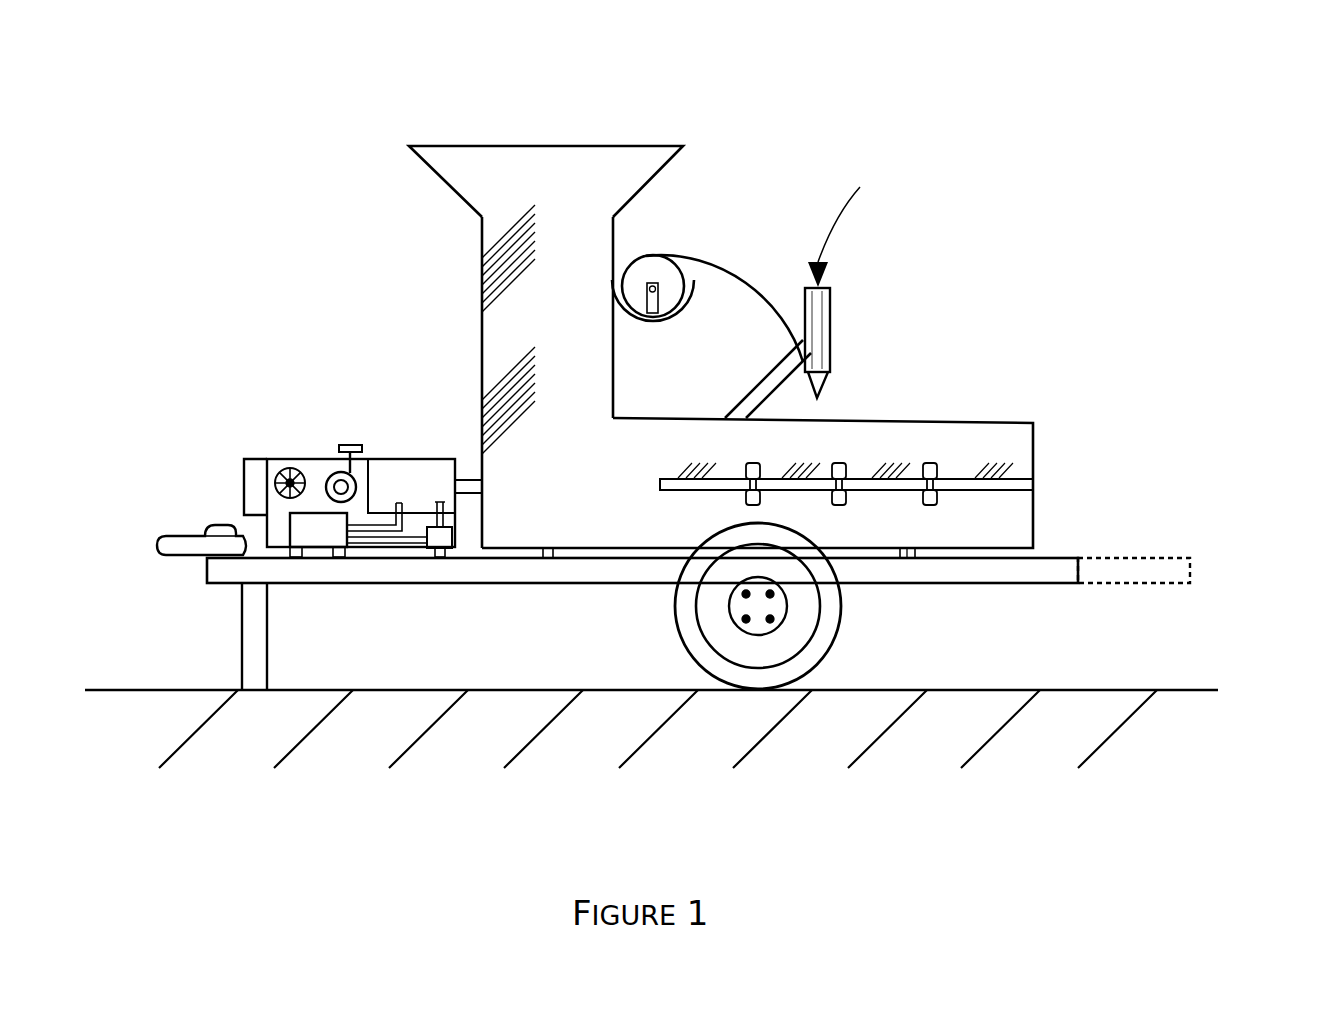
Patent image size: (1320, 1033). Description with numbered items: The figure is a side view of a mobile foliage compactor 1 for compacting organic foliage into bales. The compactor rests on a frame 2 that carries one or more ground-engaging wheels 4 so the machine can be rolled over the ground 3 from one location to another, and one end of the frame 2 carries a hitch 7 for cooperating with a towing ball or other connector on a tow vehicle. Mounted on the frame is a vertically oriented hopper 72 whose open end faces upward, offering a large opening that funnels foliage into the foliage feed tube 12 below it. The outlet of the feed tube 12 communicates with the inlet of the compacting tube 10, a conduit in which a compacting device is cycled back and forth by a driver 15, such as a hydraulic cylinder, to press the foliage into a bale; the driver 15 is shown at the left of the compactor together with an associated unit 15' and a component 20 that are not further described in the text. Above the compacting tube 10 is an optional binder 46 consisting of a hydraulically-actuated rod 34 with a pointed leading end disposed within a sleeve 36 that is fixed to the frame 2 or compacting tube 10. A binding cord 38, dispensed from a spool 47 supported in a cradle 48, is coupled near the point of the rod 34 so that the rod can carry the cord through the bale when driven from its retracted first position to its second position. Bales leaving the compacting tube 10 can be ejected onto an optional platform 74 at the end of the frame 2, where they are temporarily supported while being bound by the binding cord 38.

The foliage compactor 1 is at (1126, 112).
The frame 2 is at (1055, 572).
The ground 3 is at (1185, 690).
The ground-engaging wheels 4 is at (800, 635).
The hitch 7 is at (200, 547).
The compacting tube 10 is at (937, 442).
The foliage feed tube 12 is at (582, 253).
The driver 15 is at (443, 401).
The gearbox 15' is at (390, 434).
The motor / power unit 20 is at (268, 458).
The hydraulically-actuated rod 34 is at (820, 382).
The sleeve 36 is at (820, 317).
The binding cord 38 is at (740, 268).
The binder 46 is at (844, 220).
The spool 47 is at (667, 273).
The cradle 48 is at (645, 325).
The hopper 72 is at (430, 168).
The platform 74 is at (1138, 571).